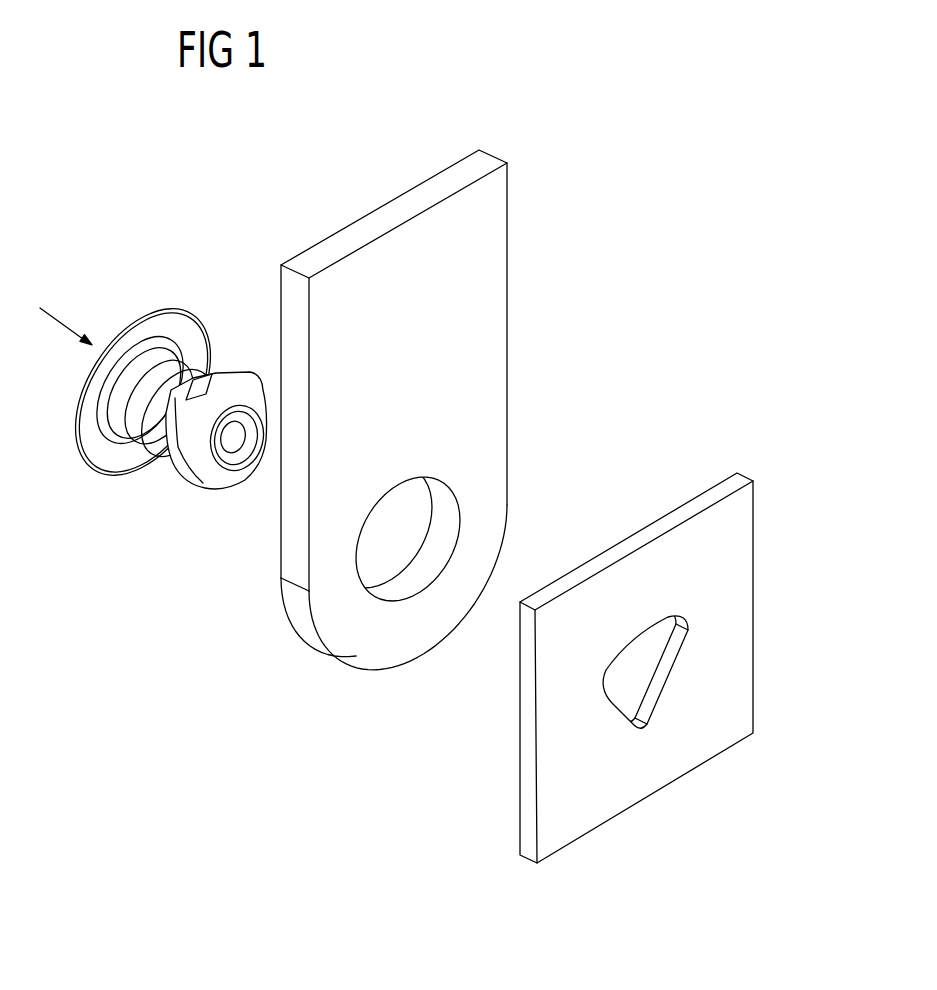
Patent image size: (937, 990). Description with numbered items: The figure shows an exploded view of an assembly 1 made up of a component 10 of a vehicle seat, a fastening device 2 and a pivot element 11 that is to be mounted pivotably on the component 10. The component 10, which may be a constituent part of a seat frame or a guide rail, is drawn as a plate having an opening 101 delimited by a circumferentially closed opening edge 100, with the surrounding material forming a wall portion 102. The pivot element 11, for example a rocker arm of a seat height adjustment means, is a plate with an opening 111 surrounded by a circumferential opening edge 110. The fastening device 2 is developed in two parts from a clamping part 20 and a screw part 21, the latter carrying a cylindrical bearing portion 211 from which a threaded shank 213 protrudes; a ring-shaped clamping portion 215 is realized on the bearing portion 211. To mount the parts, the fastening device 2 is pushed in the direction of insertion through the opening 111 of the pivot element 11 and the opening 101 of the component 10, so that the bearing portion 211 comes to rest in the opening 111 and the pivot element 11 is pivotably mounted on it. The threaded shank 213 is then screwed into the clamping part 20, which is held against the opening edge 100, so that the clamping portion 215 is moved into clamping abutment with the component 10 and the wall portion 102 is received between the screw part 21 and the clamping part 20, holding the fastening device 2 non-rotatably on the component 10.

The assembly 1 is at (531, 128).
The fastening device 2 is at (123, 498).
The clamping part 20 is at (192, 484).
The screw part 21 is at (97, 462).
The bearing portion 211 is at (178, 347).
The threaded shank 213 is at (232, 445).
The ring-shaped clamping portion 215 is at (204, 372).
The component 10 is at (578, 817).
The opening edge 100 is at (638, 720).
The opening 101 is at (648, 668).
The wall portion 102 is at (683, 677).
The pivot element 11 is at (353, 648).
The opening edge 110 is at (408, 580).
The opening 111 is at (415, 510).